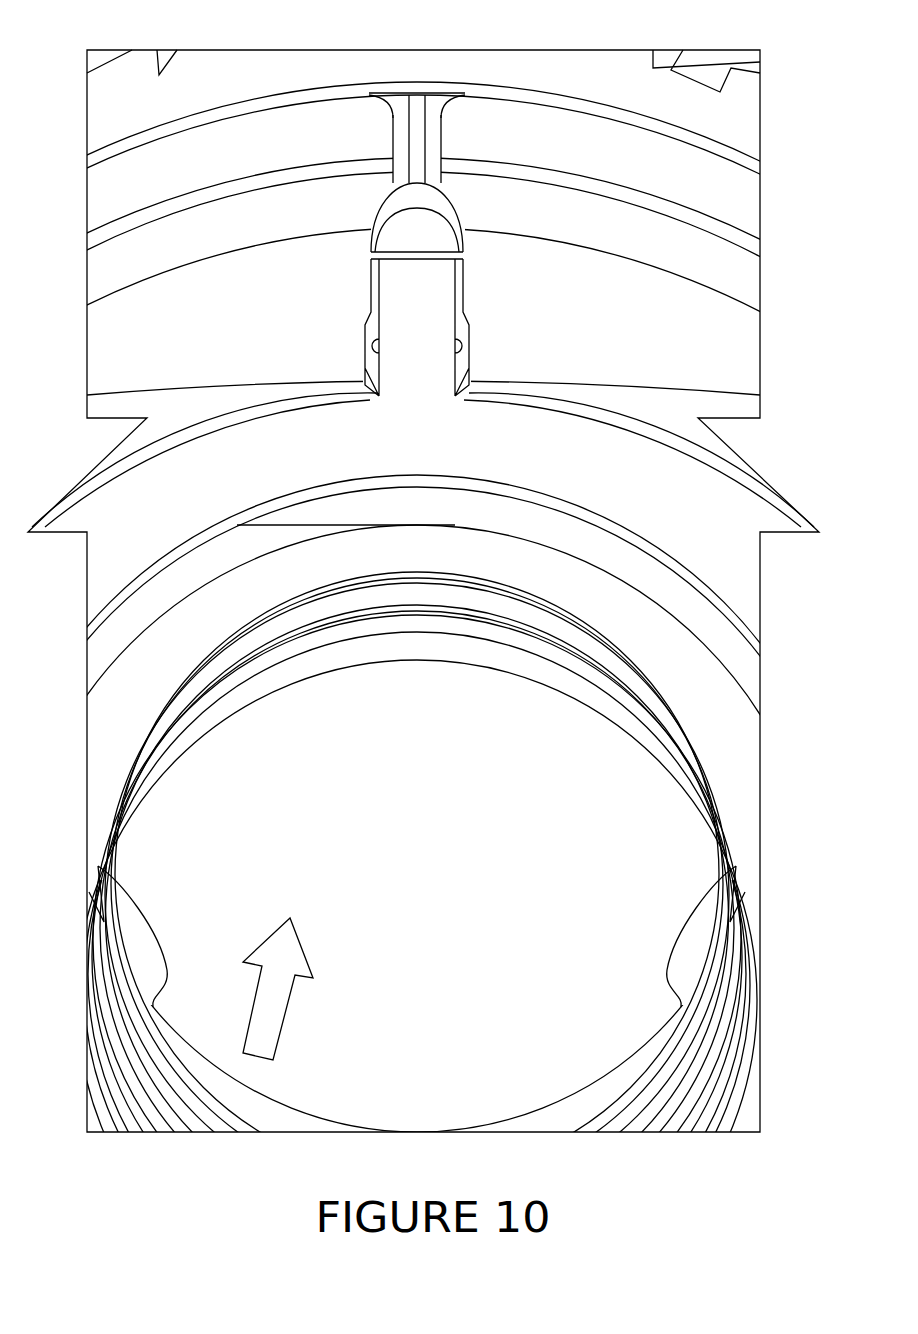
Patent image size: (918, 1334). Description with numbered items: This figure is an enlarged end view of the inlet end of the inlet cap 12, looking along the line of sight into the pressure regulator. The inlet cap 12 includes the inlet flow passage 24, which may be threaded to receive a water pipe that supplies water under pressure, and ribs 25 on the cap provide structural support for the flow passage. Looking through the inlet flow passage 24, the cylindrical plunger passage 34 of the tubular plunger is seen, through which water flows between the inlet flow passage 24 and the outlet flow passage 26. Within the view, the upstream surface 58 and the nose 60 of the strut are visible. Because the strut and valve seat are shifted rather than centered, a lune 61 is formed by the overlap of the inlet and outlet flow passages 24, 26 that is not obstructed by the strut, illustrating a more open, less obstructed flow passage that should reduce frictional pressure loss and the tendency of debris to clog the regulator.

The inlet cap 12 is at (722, 272).
The ribs 25 is at (417, 130).
The plunger passage 34 is at (525, 617).
The outlet flow passage 26 is at (462, 615).
The nose 60 is at (458, 631).
The lune 61 is at (415, 606).
The upstream surface 58 is at (412, 996).
The inlet flow passage 24 is at (269, 967).